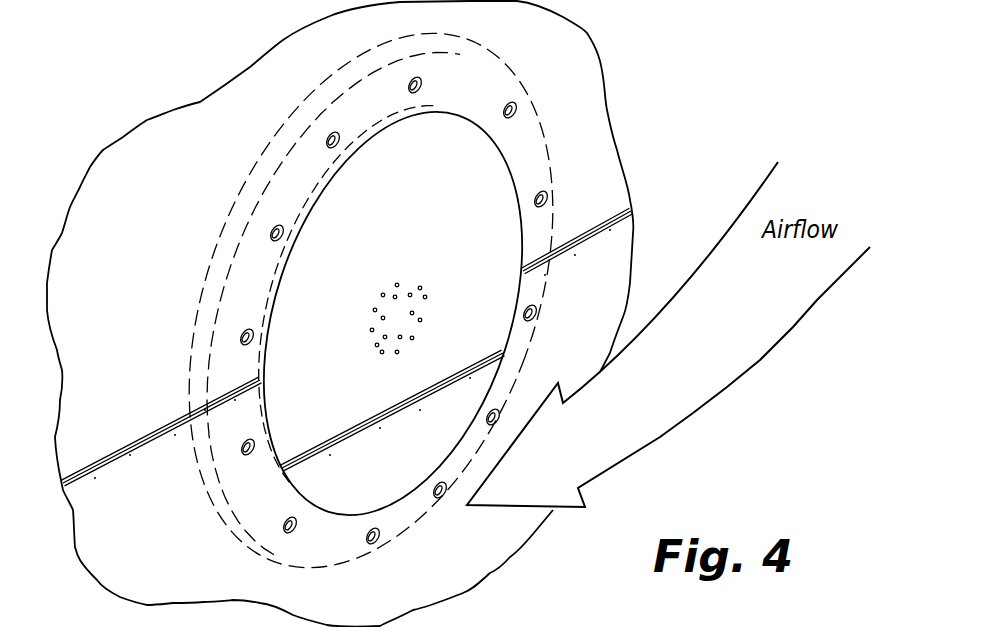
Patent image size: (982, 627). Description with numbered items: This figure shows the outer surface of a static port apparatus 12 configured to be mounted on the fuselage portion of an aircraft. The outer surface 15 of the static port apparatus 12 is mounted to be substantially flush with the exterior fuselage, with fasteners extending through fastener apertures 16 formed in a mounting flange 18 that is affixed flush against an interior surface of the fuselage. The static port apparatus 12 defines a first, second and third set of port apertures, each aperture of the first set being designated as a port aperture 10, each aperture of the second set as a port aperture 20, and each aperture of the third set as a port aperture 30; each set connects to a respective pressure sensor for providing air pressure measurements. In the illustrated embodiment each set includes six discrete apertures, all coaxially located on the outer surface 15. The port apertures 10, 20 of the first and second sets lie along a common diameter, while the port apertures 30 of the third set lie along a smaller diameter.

The first set of port apertures 10 is at (397, 283).
The static port apparatus 12 is at (230, 220).
The outer surface 15 is at (433, 167).
The fastener apertures 16 is at (553, 202).
The mounting flange 18 is at (523, 143).
The second set of port apertures 20 is at (410, 292).
The third set of port apertures 30 is at (381, 295).